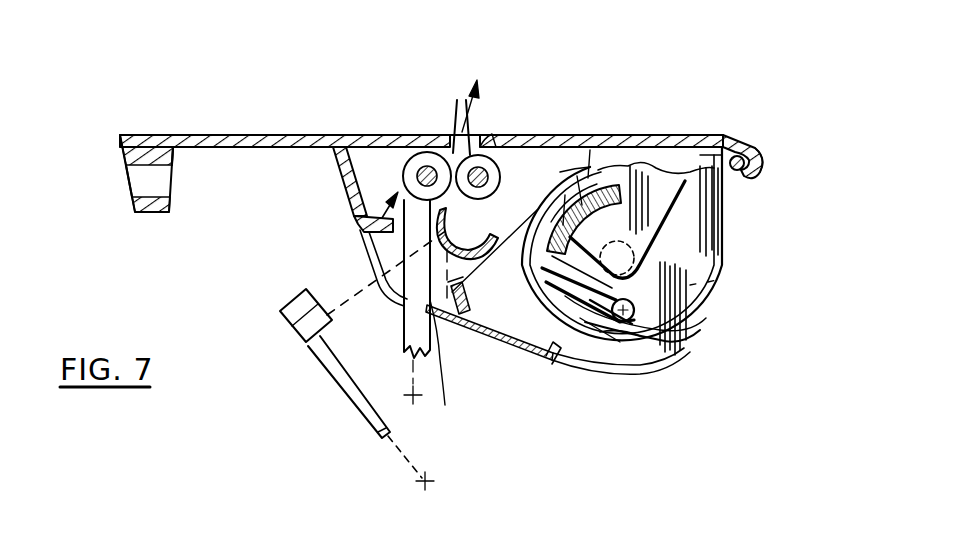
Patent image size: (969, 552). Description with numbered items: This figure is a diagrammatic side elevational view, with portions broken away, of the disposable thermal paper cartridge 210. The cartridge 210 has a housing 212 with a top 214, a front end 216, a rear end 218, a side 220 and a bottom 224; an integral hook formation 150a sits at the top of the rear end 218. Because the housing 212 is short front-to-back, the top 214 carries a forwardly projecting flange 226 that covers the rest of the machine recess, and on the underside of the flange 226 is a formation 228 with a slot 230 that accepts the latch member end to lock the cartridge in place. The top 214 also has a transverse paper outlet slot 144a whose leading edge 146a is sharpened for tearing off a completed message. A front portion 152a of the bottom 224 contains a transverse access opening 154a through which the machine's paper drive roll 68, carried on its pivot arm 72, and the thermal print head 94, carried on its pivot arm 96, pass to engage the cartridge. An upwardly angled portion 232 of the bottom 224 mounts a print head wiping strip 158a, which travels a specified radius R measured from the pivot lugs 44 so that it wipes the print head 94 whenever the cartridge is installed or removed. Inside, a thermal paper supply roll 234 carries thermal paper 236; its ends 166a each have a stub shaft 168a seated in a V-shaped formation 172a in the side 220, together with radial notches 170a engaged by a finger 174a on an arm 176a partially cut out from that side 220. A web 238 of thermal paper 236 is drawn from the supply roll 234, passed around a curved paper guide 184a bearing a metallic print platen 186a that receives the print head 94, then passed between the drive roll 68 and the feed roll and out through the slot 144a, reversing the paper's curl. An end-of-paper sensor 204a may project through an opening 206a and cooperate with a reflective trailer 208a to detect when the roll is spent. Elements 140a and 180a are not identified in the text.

The thermal paper cartridge 210 is at (230, 122).
The top 214 is at (688, 135).
The housing 212 is at (724, 135).
The hook formation 150a is at (752, 152).
The pivot lugs 44 is at (738, 172).
The slot 230 is at (145, 182).
The flange 226 is at (206, 150).
The formation 228 is at (135, 212).
The front end 216 is at (336, 170).
The front portion 152a is at (356, 224).
The access opening 154a is at (362, 252).
The paper drive roll 68 is at (412, 176).
The roller 140a is at (490, 170).
The leading edge 146a is at (458, 132).
The paper outlet slot 144a is at (480, 135).
The pivot arm 72 is at (410, 328).
The print platen 186a is at (452, 204).
The curved paper guide 184a is at (468, 270).
The rear end 218 is at (724, 212).
The web 238 is at (522, 216).
The radial notches 170a is at (600, 184).
The ends 166a is at (567, 195).
The reflective trailer 208a is at (577, 176).
The thermal paper supply roll 234 is at (590, 150).
The V-shaped formation 172a is at (690, 238).
The stub shaft 168a is at (726, 280).
The side 220 is at (636, 312).
The arm 176a is at (690, 336).
The finger 174a is at (696, 338).
The end-of-paper sensor 204a is at (556, 362).
The bottom 224 is at (634, 368).
The thermal paper 236 is at (664, 366).
The link 180a is at (612, 370).
The opening 206a is at (548, 364).
The upwardly angled portion 232 is at (472, 302).
The print head wiping strip 158a is at (467, 336).
The radius R is at (476, 356).
The thermal print head 94 is at (283, 310).
The pivot arm 96 is at (320, 360).